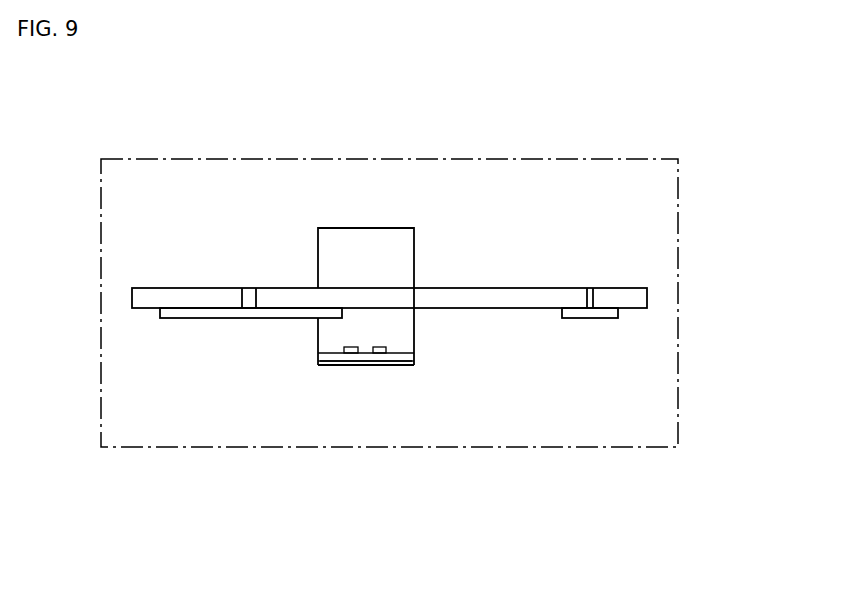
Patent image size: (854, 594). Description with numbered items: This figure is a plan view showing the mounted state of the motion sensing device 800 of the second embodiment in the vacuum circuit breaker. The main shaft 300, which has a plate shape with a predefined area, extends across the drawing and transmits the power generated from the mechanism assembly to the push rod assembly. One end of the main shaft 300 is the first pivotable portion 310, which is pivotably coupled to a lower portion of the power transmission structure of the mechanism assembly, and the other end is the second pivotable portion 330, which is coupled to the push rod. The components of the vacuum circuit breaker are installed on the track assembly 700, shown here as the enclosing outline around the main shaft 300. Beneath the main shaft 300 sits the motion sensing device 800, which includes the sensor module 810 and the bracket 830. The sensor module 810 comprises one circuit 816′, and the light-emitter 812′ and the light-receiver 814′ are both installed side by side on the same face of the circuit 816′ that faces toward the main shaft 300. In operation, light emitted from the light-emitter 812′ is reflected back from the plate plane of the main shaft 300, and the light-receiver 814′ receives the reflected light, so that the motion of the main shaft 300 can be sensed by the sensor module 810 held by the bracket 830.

The main shaft 300 is at (648, 299).
The first pivotable portion 310 is at (196, 318).
The second pivotable portion 330 is at (580, 318).
The track assembly 700 is at (657, 425).
The motion sensing device 800 is at (388, 401).
The sensor module 810 is at (411, 442).
The light-emitter 812′ is at (383, 353).
The light-receiver 814′ is at (350, 353).
The circuit 816′ is at (405, 358).
The bracket 830 is at (323, 332).